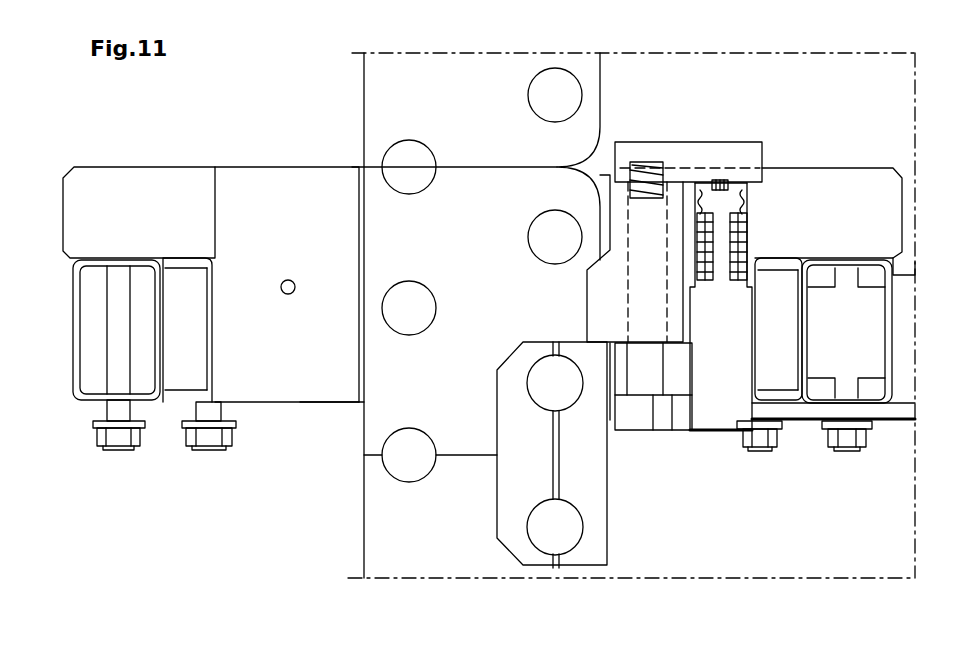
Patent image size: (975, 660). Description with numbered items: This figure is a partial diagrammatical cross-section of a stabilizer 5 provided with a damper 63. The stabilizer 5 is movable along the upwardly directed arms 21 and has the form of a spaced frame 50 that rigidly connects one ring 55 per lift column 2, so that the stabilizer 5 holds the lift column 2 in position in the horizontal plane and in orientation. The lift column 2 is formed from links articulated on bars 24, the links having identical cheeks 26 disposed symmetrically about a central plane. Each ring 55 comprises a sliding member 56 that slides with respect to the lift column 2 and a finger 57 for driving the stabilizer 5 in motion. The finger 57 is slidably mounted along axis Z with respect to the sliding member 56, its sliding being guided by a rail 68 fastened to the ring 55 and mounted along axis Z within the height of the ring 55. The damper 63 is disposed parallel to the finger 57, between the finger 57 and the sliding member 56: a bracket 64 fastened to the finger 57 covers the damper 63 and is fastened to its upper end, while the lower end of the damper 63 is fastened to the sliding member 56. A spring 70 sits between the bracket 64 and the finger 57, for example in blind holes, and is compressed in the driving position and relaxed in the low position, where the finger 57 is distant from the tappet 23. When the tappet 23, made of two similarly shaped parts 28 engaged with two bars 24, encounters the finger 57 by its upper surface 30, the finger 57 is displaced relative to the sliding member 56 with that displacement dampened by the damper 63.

The lift column 2 is at (364, 88).
The stabilizer 5 is at (269, 162).
The upwardly directed arms 21 is at (364, 518).
The tappet 23 is at (607, 530).
The bars 24 is at (408, 153).
The cheeks 26 is at (454, 311).
The parts 28 is at (583, 555).
The upper surface 30 is at (572, 340).
The frame 50 is at (63, 205).
The ring 55 is at (310, 390).
The sliding member 56 is at (614, 422).
The finger 57 is at (635, 258).
The damper 63 is at (721, 305).
The bracket 64 is at (688, 162).
The rail 68 is at (665, 368).
The spring 70 is at (646, 162).